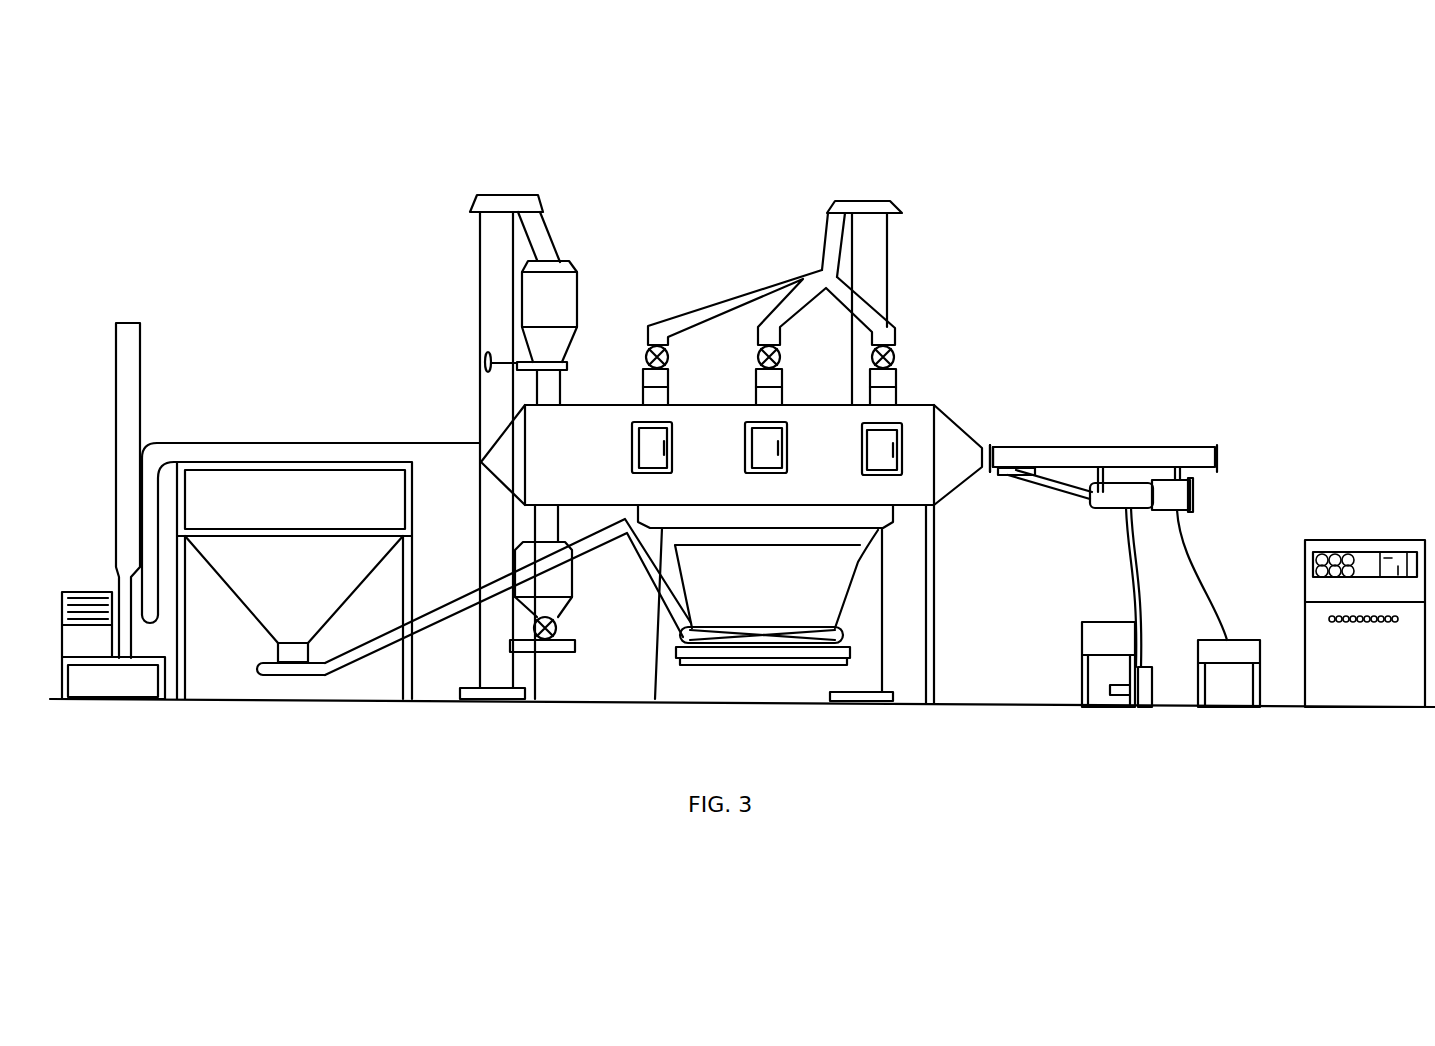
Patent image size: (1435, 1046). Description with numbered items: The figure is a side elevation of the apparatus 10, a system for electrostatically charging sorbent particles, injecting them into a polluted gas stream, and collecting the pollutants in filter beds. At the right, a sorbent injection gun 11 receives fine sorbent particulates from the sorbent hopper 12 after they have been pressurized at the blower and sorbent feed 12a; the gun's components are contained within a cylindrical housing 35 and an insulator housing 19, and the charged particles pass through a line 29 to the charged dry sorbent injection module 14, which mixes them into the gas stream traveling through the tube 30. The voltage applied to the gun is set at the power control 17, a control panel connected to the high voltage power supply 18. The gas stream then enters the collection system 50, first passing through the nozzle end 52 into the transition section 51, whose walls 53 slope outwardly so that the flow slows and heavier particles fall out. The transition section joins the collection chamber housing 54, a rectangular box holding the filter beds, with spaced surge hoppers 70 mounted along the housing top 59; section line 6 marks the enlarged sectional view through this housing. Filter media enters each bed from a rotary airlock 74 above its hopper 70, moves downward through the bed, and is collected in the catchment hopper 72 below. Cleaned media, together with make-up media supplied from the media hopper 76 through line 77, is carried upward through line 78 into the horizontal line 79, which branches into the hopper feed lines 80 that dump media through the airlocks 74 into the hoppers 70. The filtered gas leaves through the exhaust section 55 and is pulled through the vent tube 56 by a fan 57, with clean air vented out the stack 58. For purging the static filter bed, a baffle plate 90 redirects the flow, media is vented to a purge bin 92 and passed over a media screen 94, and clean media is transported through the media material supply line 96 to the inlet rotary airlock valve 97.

The apparatus 10 is at (1084, 306).
The sorbent injection gun 11 is at (1195, 498).
The sorbent hopper 12 is at (1102, 648).
The blower and sorbent feed 12a is at (1150, 695).
The charged dry sorbent injection module 14 is at (1020, 480).
The power control 17 is at (1357, 648).
The high voltage power supply 18 is at (1223, 662).
The insulator housing 19 is at (1185, 510).
The line 29 is at (1063, 492).
The tube 30 is at (1147, 452).
The cylindrical housing 35 is at (1137, 508).
The collection system 50 is at (468, 399).
The transition section 51 is at (994, 416).
The nozzle end 52 is at (992, 445).
The walls 53 is at (952, 412).
The collection chamber housing 54 is at (673, 492).
The exhaust section 55 is at (487, 440).
The vent tube 56 is at (295, 447).
The fan 57 is at (78, 595).
The stack 58 is at (134, 382).
The housing top 59 is at (800, 404).
The section line 6- 6 is at (828, 470).
The surge hopper 70 is at (643, 385).
The catchment hopper 72 is at (783, 517).
The rotary airlock 74 is at (646, 355).
The media hopper 76 is at (311, 516).
The line 77 is at (438, 613).
The line 78 is at (350, 665).
The horizontal line 79 is at (858, 205).
The hopper feed lines 80 is at (721, 305).
The baffle plate 90 is at (497, 350).
The purge bin 92 is at (562, 588).
The media screen 94 is at (553, 648).
The media material supply line 96 is at (492, 248).
The inlet rotary airlock valve 97 is at (549, 249).